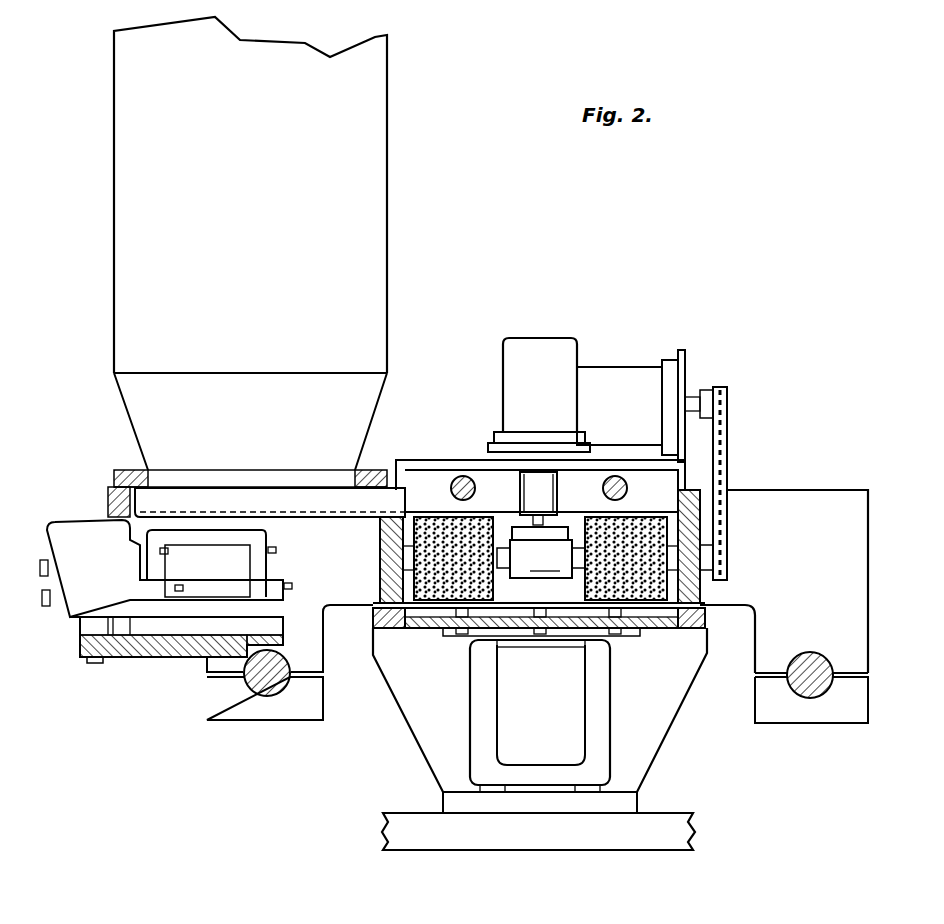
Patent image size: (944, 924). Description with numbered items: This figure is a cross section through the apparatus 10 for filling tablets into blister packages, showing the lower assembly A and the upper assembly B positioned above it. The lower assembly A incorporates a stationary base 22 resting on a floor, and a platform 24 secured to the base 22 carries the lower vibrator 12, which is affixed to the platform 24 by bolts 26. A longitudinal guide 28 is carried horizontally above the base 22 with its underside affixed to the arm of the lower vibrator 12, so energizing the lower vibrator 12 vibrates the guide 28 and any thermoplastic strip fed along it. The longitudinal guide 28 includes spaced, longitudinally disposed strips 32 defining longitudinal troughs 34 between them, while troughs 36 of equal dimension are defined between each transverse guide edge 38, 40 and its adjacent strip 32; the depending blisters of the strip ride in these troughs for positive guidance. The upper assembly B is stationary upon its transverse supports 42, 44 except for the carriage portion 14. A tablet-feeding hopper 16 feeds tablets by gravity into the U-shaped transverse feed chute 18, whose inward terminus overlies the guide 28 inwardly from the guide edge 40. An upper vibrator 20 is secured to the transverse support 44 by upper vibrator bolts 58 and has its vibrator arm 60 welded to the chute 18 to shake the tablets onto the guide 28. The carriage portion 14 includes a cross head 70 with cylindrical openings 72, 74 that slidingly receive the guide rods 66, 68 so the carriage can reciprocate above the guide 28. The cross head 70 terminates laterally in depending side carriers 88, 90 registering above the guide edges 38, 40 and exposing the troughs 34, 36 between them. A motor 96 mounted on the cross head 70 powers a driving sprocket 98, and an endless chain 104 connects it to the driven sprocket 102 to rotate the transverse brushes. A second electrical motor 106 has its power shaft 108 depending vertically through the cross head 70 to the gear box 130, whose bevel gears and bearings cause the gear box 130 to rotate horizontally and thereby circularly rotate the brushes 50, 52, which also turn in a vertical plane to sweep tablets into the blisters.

The apparatus for filling tablets into blister packages 10 is at (396, 458).
The lower vibrator 12 is at (573, 735).
The carriage portion 14 is at (668, 361).
The tablet-feeding hopper 16 is at (386, 166).
The transverse feed chute 18 is at (162, 495).
The upper vibrator 20 is at (62, 520).
The stationary base 22 is at (686, 838).
The platform 24 is at (617, 812).
The bolts 26 is at (585, 795).
The longitudinal guide 28 is at (660, 630).
The strips 32 is at (548, 634).
The longitudinal troughs 34 is at (527, 560).
The longitudinal troughs 36 is at (430, 634).
The transverse guide edge 38 is at (705, 613).
The transverse guide edge 40 is at (372, 607).
The transverse support 42 is at (790, 716).
The transverse support 44 is at (256, 714).
The brush 50 is at (655, 540).
The brush 52 is at (400, 624).
The upper vibrator bolts 58 is at (95, 664).
The vibrator arm 60 is at (250, 522).
The guide rod 66 is at (466, 478).
The guide rod 68 is at (620, 478).
The cross head 70 is at (432, 490).
The cylindrical opening 72 is at (448, 485).
The cylindrical opening 74 is at (597, 485).
The side carrier 88 is at (692, 590).
The side carrier 90 is at (380, 572).
The motor 96 is at (612, 372).
The driving sprocket 98 is at (727, 400).
The driven sprocket 102 is at (722, 560).
The endless chain 104 is at (728, 435).
The second electrical motor 106 is at (553, 352).
The power shaft 108 is at (513, 505).
The gear box 130 is at (525, 567).
The lower assembly A is at (713, 656).
The upper assembly B is at (588, 354).